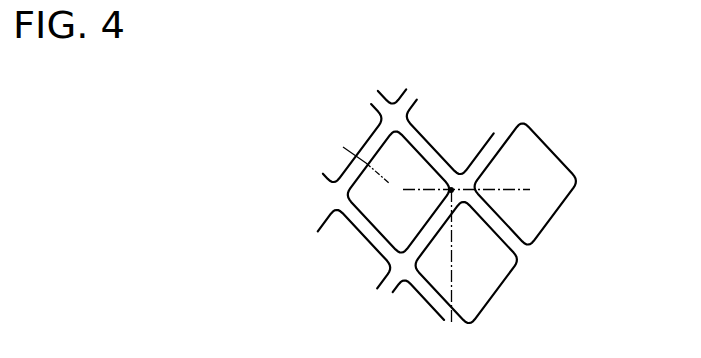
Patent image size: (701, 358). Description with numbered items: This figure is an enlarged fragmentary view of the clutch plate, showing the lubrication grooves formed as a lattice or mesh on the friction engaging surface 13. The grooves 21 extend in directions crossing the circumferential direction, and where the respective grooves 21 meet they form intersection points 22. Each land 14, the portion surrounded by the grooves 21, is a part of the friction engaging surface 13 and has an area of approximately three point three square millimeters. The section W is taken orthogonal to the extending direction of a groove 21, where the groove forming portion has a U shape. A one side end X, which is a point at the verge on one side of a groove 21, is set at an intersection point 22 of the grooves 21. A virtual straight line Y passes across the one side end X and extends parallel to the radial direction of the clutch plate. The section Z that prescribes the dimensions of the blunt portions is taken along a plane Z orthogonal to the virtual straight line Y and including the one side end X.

The land 14 is at (382, 211).
The friction engaging surface 13 is at (364, 222).
The groove 21 is at (419, 140).
The intersection point 22 is at (395, 125).
The section orthogonal to the extending direction of the groove W is at (343, 147).
The one side end X is at (452, 186).
The virtual straight line Y is at (453, 258).
The section (plane) Z is at (523, 188).